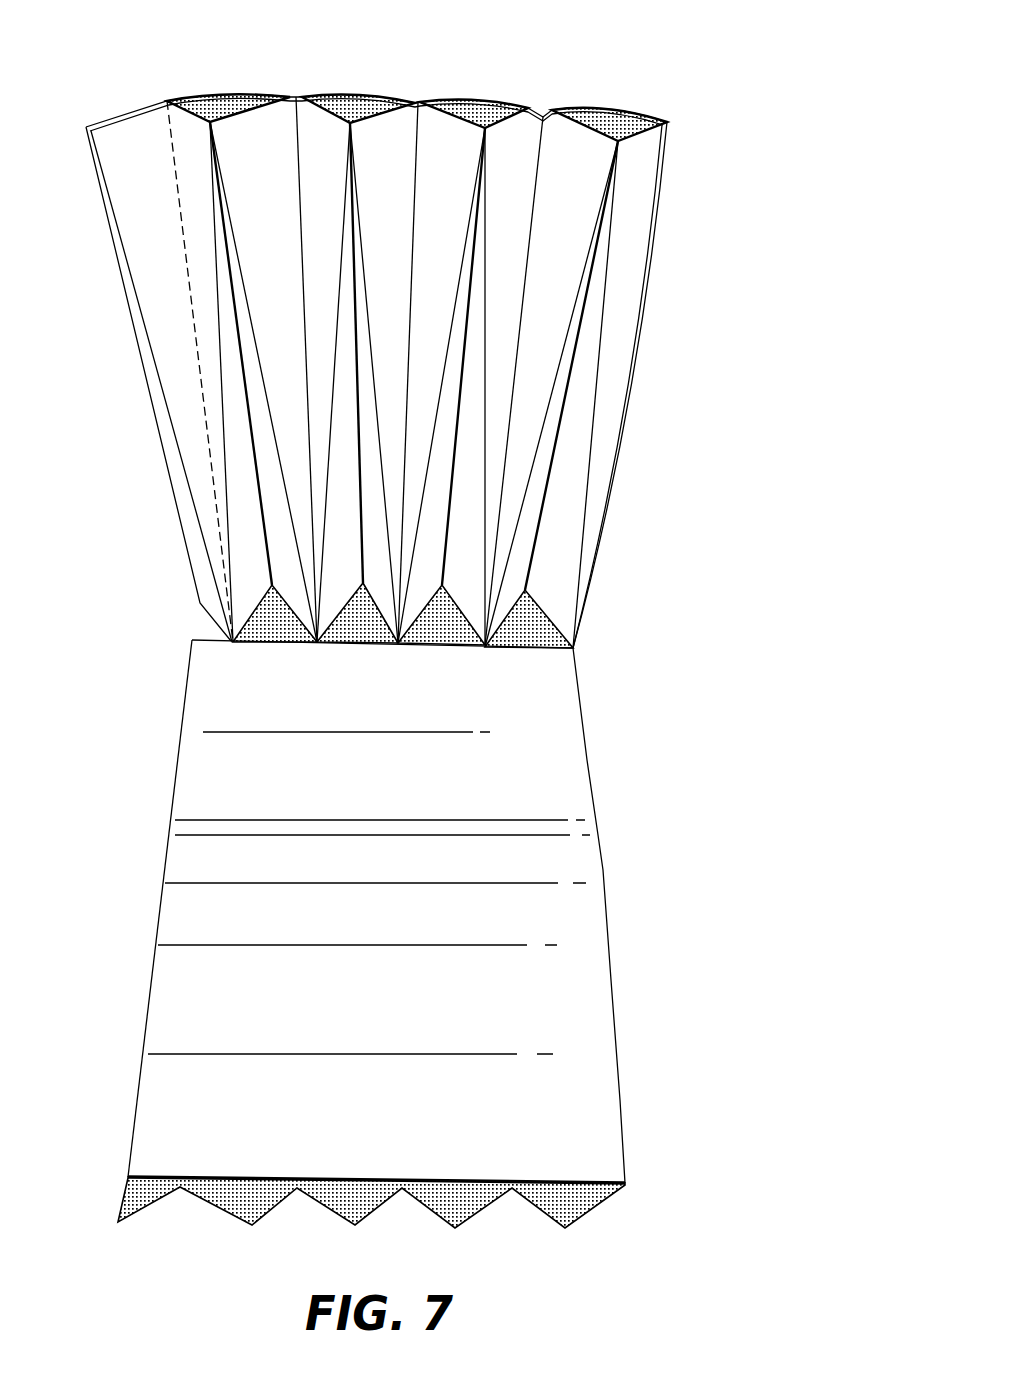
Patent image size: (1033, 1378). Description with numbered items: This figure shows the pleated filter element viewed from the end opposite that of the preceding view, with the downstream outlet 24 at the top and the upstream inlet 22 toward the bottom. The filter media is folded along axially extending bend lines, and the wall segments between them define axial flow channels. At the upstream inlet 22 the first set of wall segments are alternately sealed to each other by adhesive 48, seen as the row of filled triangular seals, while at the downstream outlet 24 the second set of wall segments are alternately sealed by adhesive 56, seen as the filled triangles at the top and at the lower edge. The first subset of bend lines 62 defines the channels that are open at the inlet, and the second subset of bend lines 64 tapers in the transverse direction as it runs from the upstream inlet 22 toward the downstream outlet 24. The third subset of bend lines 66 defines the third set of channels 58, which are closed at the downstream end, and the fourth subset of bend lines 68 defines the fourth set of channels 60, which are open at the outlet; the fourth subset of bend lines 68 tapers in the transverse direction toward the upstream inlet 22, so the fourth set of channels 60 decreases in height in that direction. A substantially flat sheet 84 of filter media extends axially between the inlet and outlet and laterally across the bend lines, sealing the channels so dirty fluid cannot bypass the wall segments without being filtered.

The upstream inlet 22 is at (598, 648).
The downstream outlet 24 is at (692, 112).
The adhesive 48 is at (525, 620).
The adhesive 56 is at (617, 120).
The third set of channels 58 is at (485, 100).
The fourth set of channels 60 is at (572, 142).
The first subset of bend lines 62 is at (582, 543).
The second subset of bend lines 64 is at (552, 502).
The third subset of bend lines 66 is at (595, 263).
The fourth subset of bend lines 68 is at (537, 182).
The substantially flat sheet 84 is at (578, 924).